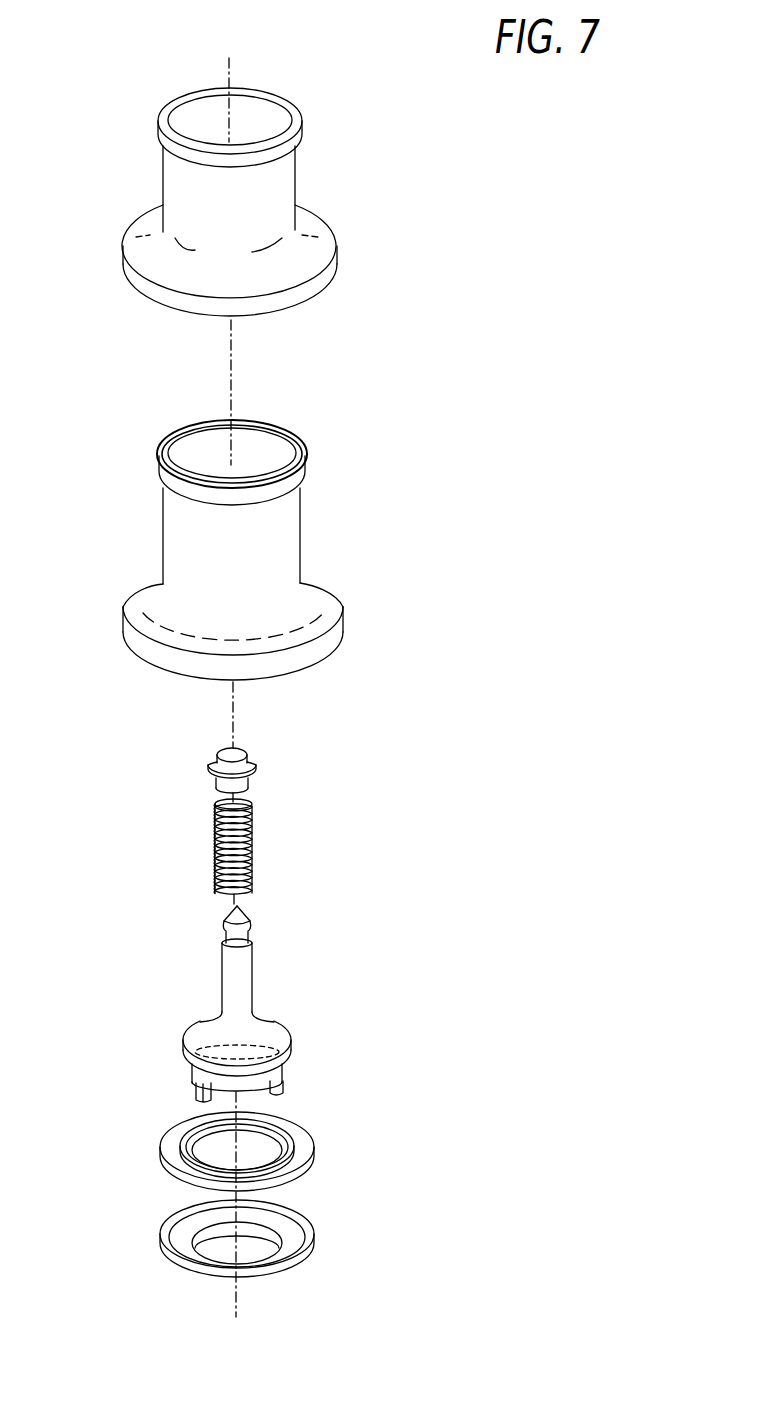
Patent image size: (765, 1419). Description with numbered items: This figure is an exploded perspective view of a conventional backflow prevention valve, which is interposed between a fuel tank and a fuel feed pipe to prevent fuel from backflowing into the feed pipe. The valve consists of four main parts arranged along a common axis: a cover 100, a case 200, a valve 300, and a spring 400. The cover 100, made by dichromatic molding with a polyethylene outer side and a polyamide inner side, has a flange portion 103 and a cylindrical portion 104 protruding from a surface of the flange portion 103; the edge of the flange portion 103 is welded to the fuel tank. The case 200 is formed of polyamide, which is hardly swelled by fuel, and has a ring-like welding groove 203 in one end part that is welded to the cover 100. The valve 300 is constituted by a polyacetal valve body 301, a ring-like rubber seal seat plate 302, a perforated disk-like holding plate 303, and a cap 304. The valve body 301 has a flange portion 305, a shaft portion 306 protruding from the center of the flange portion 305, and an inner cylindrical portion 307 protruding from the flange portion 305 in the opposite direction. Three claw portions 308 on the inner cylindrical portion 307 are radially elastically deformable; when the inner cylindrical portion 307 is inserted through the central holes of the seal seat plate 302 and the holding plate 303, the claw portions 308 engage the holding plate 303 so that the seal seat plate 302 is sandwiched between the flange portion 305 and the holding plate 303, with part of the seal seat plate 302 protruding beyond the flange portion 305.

The cover 100 is at (242, 202).
The flange portion 103 is at (143, 258).
The cylindrical portion 104 is at (172, 165).
The case 200 is at (224, 531).
The welding groove 203 is at (268, 423).
The valve 300 is at (258, 1091).
The valve body 301 is at (253, 1035).
The seal seat plate 302 is at (314, 1149).
The holding plate 303 is at (314, 1239).
The cap 304 is at (258, 766).
The flange portion 305 is at (187, 1042).
The shaft portion 306 is at (228, 965).
The inner cylindrical portion 307 is at (253, 1083).
The claw portions 308 is at (196, 1090).
The spring 400 is at (254, 838).